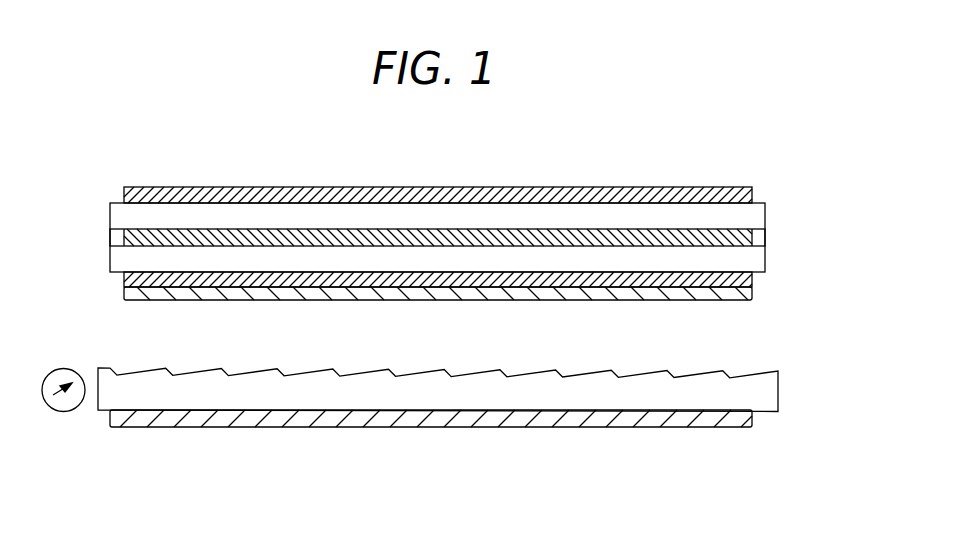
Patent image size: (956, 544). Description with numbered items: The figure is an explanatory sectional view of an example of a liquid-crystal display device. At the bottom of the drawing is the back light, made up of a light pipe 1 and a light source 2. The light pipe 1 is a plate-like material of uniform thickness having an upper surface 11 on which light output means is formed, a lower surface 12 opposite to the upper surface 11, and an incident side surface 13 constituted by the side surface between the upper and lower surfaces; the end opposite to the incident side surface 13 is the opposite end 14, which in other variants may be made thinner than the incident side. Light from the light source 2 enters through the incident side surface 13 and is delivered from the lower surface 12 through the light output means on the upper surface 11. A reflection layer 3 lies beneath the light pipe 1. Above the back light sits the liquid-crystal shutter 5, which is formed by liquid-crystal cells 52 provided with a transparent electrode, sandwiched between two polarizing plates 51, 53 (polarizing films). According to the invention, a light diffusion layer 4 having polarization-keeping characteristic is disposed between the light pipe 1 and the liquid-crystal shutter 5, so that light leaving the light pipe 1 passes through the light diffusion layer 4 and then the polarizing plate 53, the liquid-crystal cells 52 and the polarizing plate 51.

The light pipe 1 is at (470, 396).
The light source 2 is at (45, 402).
The reflection layer 3 is at (712, 433).
The light diffusion layer 4 is at (752, 293).
The liquid-crystal shutter 5 is at (483, 233).
The upper surface 11 is at (530, 369).
The lower surface 12 is at (811, 427).
The incident side surface 13 is at (95, 405).
The opposite end 14 is at (778, 390).
The polarizing plate 51 is at (752, 195).
The liquid-crystal cells 52 is at (767, 220).
The polarizing plate 53 is at (469, 277).